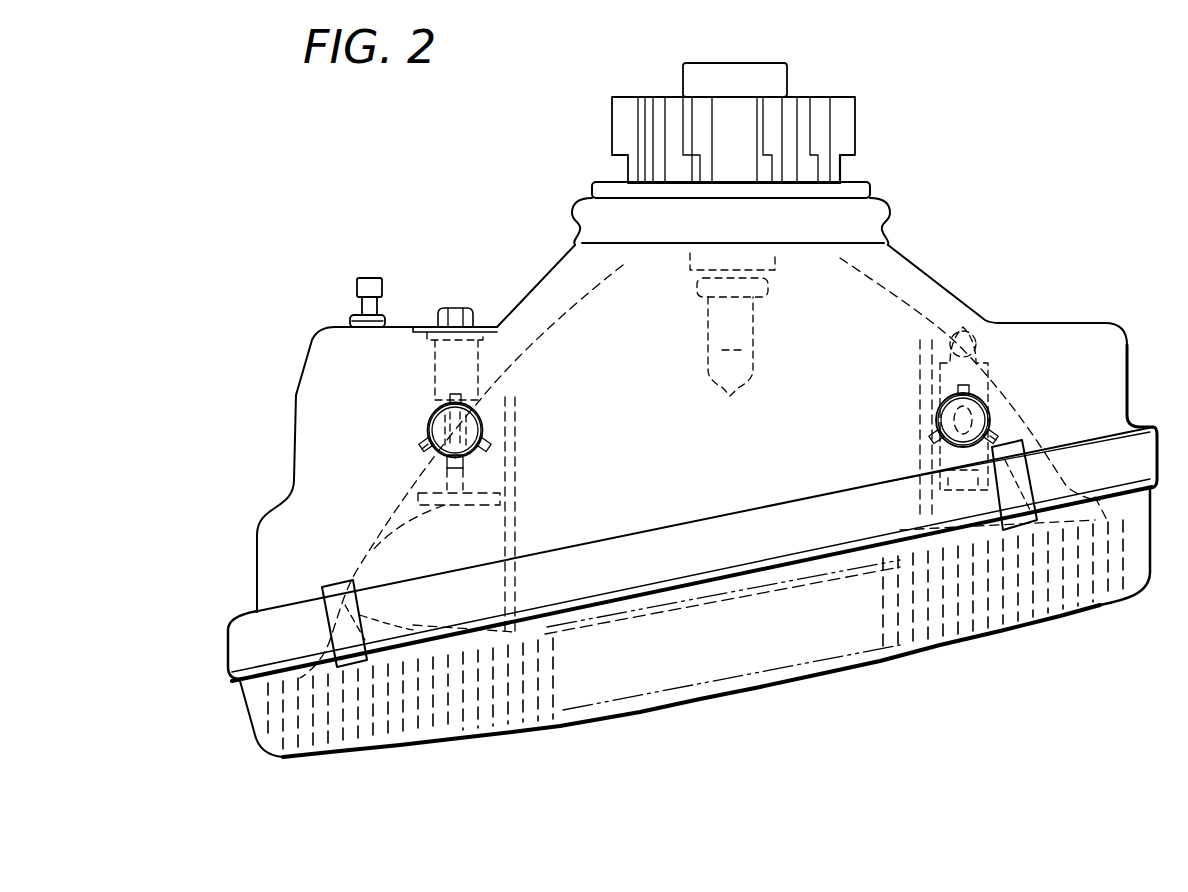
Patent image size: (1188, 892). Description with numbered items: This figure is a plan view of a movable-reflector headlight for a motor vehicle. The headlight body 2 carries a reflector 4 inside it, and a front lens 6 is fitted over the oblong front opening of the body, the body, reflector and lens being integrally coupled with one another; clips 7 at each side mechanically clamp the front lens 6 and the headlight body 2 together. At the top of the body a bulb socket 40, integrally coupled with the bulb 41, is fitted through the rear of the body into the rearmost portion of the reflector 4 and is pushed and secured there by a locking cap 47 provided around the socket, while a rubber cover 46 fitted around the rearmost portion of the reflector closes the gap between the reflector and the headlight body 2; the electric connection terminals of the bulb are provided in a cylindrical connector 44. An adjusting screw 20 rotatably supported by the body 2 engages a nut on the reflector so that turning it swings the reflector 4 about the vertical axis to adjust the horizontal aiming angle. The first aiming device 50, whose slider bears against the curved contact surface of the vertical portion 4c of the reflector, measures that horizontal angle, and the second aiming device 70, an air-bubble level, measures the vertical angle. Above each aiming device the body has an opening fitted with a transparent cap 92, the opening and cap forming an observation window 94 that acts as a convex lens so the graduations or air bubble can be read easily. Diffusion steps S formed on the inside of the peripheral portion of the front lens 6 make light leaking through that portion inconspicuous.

The headlight body 2 is at (515, 300).
The reflector 4 is at (898, 290).
The vertical portion of the reflector 4c is at (373, 550).
The front lens 6 is at (720, 698).
The clip 7 is at (322, 582).
The adjusting screw 20 is at (344, 308).
The bulb socket 40 is at (676, 90).
The bulb 41 is at (755, 343).
The cylindrical connector 44 is at (773, 63).
The rubber cover 46 is at (872, 183).
The locking cap 47 is at (847, 97).
The first aiming device 50 is at (417, 434).
The second aiming device 70 is at (997, 359).
The transparent cap 92 is at (412, 448).
The observation window 94 is at (425, 452).
The diffusion steps S is at (406, 752).